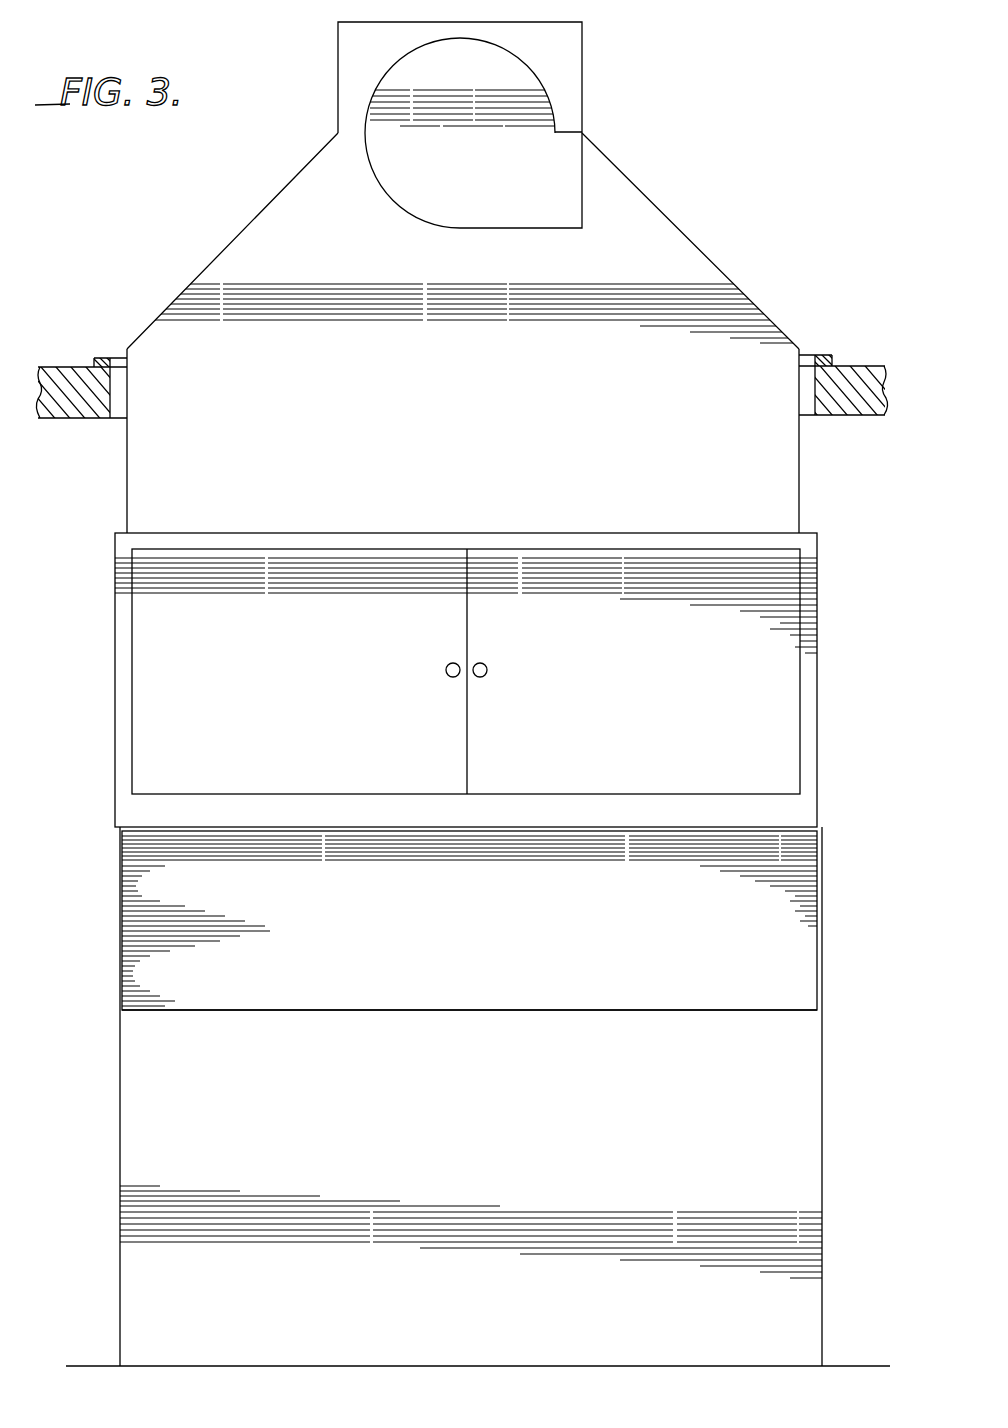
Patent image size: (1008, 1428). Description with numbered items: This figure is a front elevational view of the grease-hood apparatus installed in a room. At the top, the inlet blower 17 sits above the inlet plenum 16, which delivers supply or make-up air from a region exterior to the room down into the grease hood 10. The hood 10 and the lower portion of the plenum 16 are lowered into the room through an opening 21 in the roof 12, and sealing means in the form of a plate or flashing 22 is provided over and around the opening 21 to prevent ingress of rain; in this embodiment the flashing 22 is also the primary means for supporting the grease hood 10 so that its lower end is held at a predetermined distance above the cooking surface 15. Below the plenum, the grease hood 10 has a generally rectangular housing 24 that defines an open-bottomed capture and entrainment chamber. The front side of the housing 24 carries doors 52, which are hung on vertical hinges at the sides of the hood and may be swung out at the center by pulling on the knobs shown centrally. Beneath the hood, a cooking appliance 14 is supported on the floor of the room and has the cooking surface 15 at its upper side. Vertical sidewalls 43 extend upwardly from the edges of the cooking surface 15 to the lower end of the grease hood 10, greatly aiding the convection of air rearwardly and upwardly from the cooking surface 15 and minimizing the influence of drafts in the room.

The grease hood 10 is at (855, 630).
The roof 12 is at (862, 366).
The cooking appliance 14 is at (474, 1200).
The cooking surface 15 is at (523, 1010).
The inlet plenum 16 is at (228, 272).
The inlet blower 17 is at (540, 97).
The opening 21 is at (808, 408).
The flashing 22 is at (822, 356).
The housing 24 is at (115, 687).
The vertical sidewalls 43 is at (122, 928).
The doors 52 is at (314, 677).